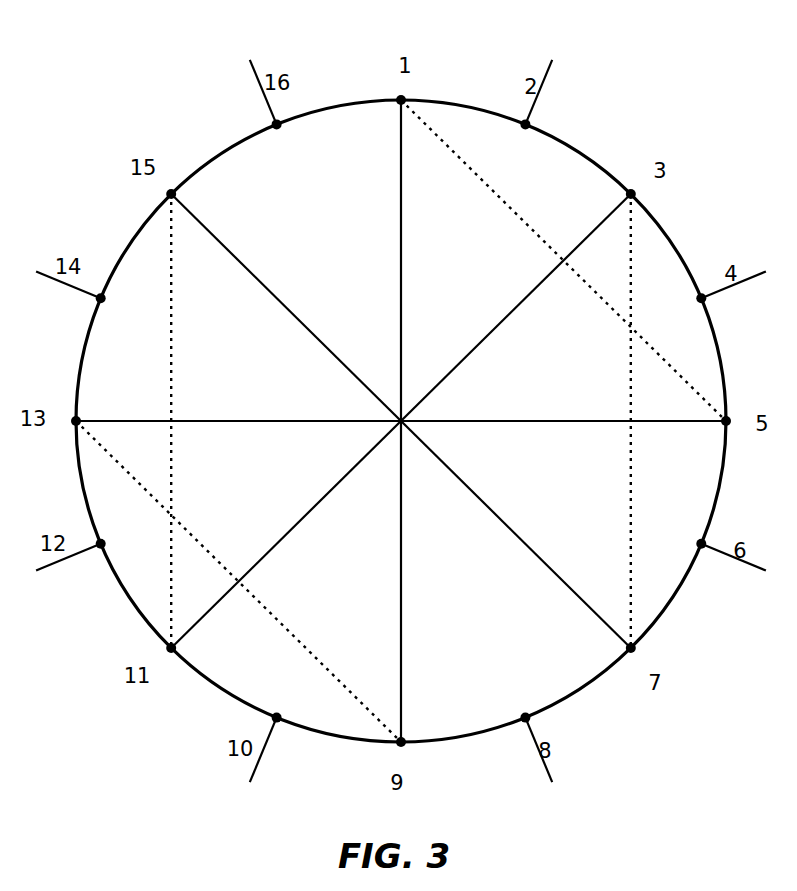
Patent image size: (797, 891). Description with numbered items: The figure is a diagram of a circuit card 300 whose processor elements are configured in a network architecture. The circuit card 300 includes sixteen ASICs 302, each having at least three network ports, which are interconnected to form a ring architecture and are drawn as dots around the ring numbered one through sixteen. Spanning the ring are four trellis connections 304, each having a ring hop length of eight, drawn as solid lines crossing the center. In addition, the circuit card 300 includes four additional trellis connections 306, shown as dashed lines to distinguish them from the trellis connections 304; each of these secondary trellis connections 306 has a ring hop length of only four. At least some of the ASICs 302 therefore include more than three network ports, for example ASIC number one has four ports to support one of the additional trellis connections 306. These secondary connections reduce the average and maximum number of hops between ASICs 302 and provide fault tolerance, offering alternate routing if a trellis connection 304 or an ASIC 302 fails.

The circuit card 300 is at (135, 50).
The ASICs 302 is at (279, 126).
The trellis connections 304 is at (262, 283).
The additional trellis connections 306 is at (505, 199).